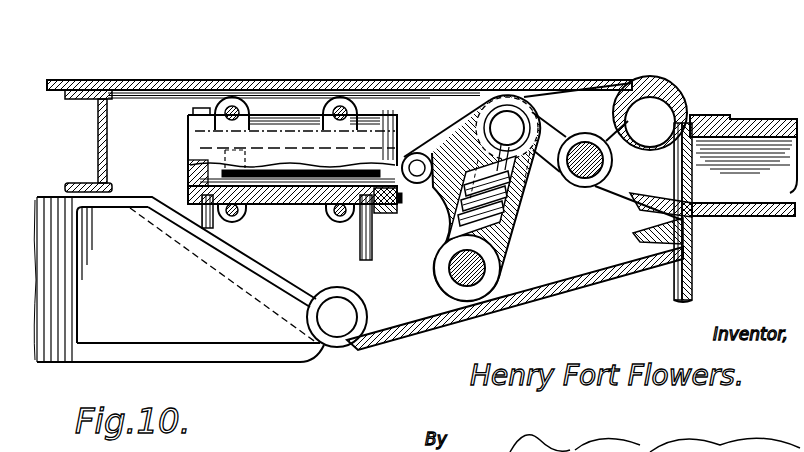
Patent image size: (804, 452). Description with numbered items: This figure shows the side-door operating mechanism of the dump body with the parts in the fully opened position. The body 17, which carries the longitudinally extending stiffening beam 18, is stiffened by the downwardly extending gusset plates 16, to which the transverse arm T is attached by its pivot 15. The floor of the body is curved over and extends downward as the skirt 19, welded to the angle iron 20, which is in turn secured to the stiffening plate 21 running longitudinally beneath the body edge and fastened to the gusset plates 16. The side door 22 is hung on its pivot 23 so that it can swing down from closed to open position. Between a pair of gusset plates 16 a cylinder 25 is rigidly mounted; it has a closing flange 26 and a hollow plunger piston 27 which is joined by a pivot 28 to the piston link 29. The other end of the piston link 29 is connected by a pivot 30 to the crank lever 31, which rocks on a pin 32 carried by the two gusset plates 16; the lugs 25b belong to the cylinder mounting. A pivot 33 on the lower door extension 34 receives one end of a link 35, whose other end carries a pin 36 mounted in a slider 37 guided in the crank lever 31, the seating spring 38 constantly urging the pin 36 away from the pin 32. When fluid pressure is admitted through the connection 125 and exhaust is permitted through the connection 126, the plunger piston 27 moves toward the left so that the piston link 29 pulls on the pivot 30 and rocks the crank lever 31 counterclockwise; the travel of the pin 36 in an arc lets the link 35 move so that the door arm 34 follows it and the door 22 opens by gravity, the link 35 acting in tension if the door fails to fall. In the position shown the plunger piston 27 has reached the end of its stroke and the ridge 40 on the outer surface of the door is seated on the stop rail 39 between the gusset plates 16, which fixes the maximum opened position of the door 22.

The pivot 15 is at (337, 335).
The gusset plate 16 is at (570, 90).
The body 17 is at (401, 84).
The stiffening beam 18 is at (119, 104).
The skirt 19 is at (690, 274).
The angle iron 20 is at (682, 293).
The stiffening plate 21 is at (543, 287).
The side door 22 is at (760, 120).
The pivot 23 is at (663, 91).
The cylinder 25 is at (292, 148).
The cylinder lugs 25b is at (233, 106).
The closing flange 26 is at (387, 210).
The plunger piston 27 is at (288, 192).
The pivot 28 is at (236, 165).
The piston link 29 is at (329, 190).
The pivot 30 is at (417, 166).
The crank lever 31 is at (453, 132).
The pin 32 is at (450, 275).
The pivot 33 is at (587, 180).
The lower door extension 34 is at (628, 152).
The link 35 is at (553, 132).
The pin 36 is at (507, 128).
The slider 37 is at (500, 173).
The seating spring 38 is at (490, 223).
The stop rail 39 is at (633, 236).
The ridge 40 is at (690, 220).
The connection 125 is at (356, 245).
The connection 126 is at (203, 227).
The transverse arm T is at (93, 296).